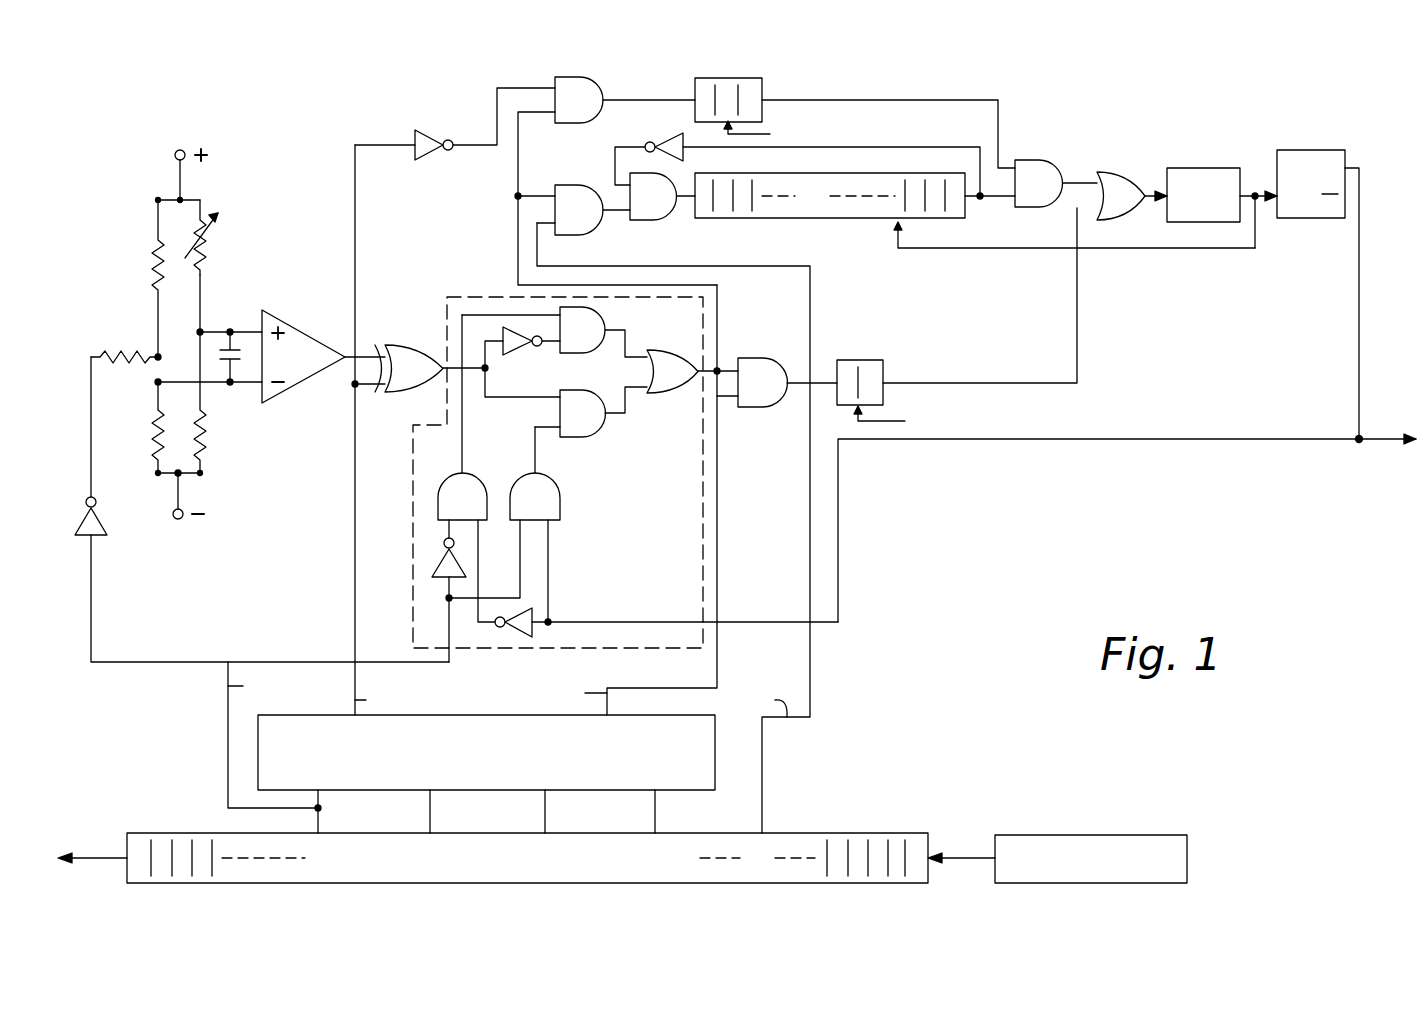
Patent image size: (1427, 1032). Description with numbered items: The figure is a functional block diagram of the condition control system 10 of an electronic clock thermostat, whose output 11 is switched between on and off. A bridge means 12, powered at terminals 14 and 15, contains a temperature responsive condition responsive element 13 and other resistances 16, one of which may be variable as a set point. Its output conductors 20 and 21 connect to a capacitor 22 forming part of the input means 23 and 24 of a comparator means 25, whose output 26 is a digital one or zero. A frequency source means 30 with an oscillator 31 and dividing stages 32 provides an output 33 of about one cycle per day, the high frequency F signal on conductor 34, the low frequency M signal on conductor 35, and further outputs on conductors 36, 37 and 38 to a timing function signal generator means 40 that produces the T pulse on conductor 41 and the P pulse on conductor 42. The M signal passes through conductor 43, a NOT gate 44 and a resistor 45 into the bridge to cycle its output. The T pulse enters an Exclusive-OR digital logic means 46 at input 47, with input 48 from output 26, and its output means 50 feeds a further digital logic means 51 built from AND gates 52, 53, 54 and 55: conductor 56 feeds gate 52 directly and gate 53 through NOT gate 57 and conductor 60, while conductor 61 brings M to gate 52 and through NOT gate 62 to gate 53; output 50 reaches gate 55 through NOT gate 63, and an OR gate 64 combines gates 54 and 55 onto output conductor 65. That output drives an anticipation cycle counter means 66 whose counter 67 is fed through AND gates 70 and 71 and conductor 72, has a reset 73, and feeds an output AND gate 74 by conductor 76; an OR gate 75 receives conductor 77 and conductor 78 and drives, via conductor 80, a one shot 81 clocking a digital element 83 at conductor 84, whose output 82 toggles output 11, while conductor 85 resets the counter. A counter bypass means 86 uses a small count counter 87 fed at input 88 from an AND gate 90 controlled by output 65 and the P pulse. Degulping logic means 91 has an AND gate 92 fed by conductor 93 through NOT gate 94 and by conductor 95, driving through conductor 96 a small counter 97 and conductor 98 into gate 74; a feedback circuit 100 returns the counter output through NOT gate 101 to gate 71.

The condition control system 10 is at (1127, 528).
The output 11 is at (1386, 438).
The bridge means 12 is at (142, 223).
The condition responsive element 13 is at (208, 252).
The terminal 14 is at (183, 150).
The terminal 15 is at (176, 522).
The resistances 16 is at (152, 258).
The output conductor 20 is at (205, 332).
The output conductor 21 is at (168, 386).
The capacitor 22 is at (222, 360).
The input means 23 is at (264, 330).
The input means 24 is at (258, 388).
The comparator means 25 is at (303, 356).
The output 26 is at (346, 355).
The frequency source means 30 is at (527, 858).
The oscillator 31 is at (1080, 835).
The dividing stages 32 is at (864, 833).
The output 33 is at (110, 856).
The conductor 34 is at (810, 572).
The conductor 35 is at (228, 750).
The conductor 36 is at (430, 808).
The conductor 37 is at (545, 808).
The conductor 38 is at (655, 808).
The timing function signal generator means 40 is at (486, 737).
The conductor 41 is at (358, 645).
The conductor 42 is at (636, 688).
The conductor 43 is at (95, 600).
The NOT gate 44 is at (102, 520).
The resistor 45 is at (126, 352).
The digital logic means 46 is at (398, 388).
The input 47 is at (364, 396).
The input 48 is at (364, 350).
The output means 50 is at (440, 350).
The further digital logic means 51 is at (700, 487).
The AND gate 52 is at (535, 473).
The AND gate 53 is at (462, 417).
The AND gate 54 is at (566, 402).
The AND gate 55 is at (554, 332).
The input means 56 is at (612, 622).
The NOT gate 57 is at (515, 640).
The conductor 60 is at (478, 584).
The conductor 61 is at (455, 660).
The NOT gate 62 is at (432, 565).
The NOT gate 63 is at (514, 348).
The OR gate 64 is at (660, 388).
The output conductor 65 is at (718, 368).
The anticipation cycle counter means 66 is at (975, 212).
The counter 67 is at (814, 195).
The AND gate 70 is at (570, 230).
The AND gate 71 is at (656, 218).
The conductor 72 is at (684, 208).
The reset 73 is at (905, 240).
The AND gate 74 is at (1045, 160).
The OR gate 75 is at (1108, 172).
The conductor 76 is at (982, 200).
The conductor 77 is at (1068, 183).
The conductor 78 is at (1077, 232).
The conductor 80 is at (1152, 194).
The one shot 81 is at (1212, 168).
The bistable output means 82 is at (1362, 190).
The digital element 83 is at (1315, 150).
The conductor 84 is at (1256, 192).
The conductor 85 is at (1152, 250).
The counter bypass means 86 is at (980, 296).
The small count counter 87 is at (872, 362).
The input 88 is at (816, 383).
The AND gate 90 is at (750, 402).
The degulping logic means 91 is at (848, 121).
The AND gate 92 is at (570, 77).
The conductor 93 is at (526, 88).
The NOT gate 94 is at (426, 130).
The conductor 95 is at (514, 178).
The conductor 96 is at (624, 100).
The small counter 97 is at (728, 85).
The conductor 98 is at (856, 100).
The feedback circuit 100 is at (900, 147).
The NOT gate 101 is at (660, 136).